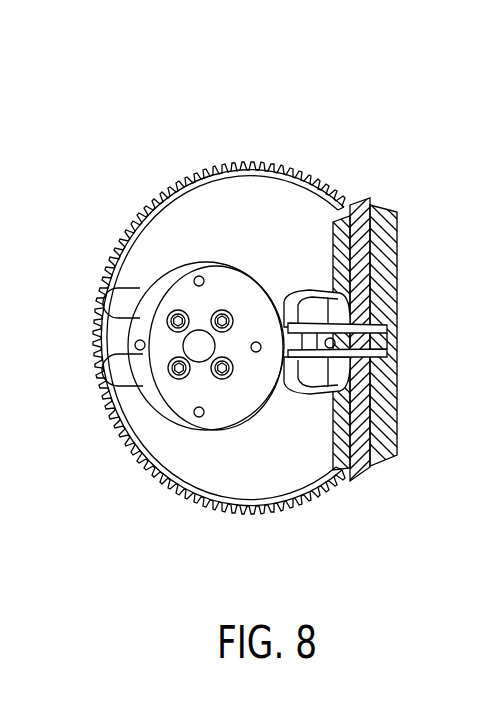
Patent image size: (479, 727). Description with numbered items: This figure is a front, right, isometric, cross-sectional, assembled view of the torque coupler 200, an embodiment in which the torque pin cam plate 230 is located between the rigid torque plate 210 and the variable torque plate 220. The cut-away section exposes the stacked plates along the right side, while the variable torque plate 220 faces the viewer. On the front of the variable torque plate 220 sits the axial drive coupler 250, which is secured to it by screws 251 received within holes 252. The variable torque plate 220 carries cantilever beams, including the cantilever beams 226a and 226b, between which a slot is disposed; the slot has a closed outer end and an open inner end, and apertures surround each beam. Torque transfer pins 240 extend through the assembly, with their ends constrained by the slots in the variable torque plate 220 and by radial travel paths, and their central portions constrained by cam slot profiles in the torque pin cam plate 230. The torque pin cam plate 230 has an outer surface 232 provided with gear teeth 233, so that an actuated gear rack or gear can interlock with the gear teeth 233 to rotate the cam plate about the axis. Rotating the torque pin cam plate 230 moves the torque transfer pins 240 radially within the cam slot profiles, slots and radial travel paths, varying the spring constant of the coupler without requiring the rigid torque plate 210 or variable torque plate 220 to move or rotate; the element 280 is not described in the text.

The torque coupler 200 is at (406, 97).
The rigid torque plate 210 is at (390, 243).
The variable torque plate 220 is at (220, 317).
The cantilever beam 226a is at (352, 323).
The cantilever beam 226b is at (356, 357).
The torque pin cam plate 230 is at (362, 412).
The outer surface 232 is at (251, 162).
The gear teeth 233 is at (297, 167).
The torque transfer pins 240 is at (388, 329).
The axial drive coupler 250 is at (147, 385).
The screws 251 is at (167, 318).
The holes 252 is at (215, 312).
The shaft boss 280 is at (196, 348).